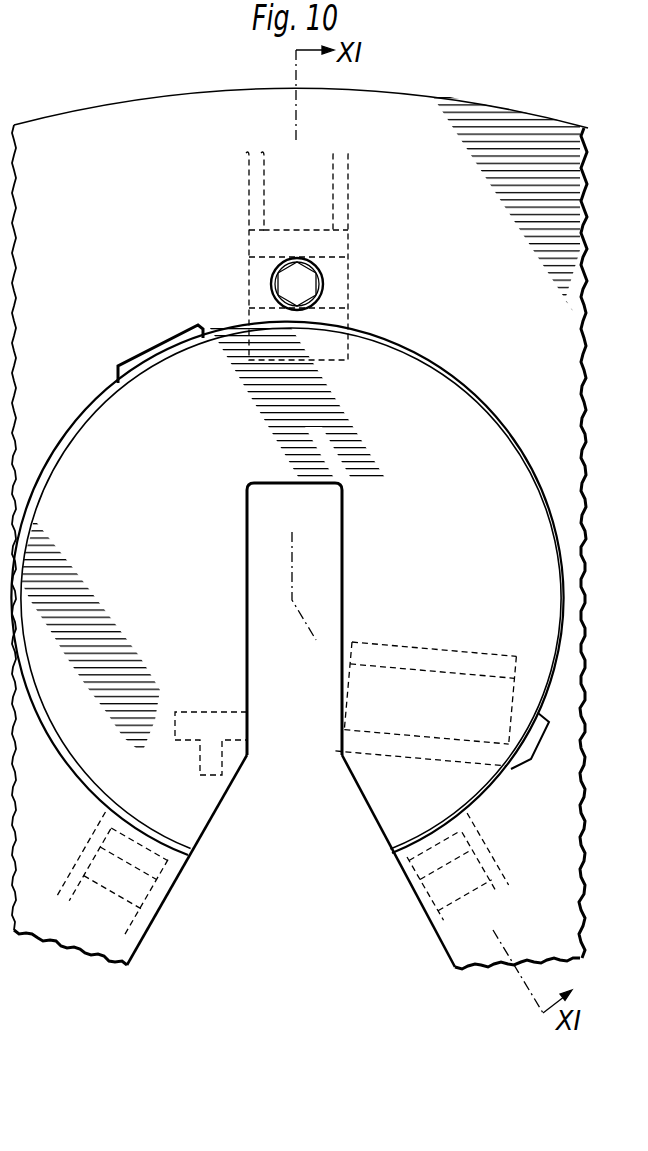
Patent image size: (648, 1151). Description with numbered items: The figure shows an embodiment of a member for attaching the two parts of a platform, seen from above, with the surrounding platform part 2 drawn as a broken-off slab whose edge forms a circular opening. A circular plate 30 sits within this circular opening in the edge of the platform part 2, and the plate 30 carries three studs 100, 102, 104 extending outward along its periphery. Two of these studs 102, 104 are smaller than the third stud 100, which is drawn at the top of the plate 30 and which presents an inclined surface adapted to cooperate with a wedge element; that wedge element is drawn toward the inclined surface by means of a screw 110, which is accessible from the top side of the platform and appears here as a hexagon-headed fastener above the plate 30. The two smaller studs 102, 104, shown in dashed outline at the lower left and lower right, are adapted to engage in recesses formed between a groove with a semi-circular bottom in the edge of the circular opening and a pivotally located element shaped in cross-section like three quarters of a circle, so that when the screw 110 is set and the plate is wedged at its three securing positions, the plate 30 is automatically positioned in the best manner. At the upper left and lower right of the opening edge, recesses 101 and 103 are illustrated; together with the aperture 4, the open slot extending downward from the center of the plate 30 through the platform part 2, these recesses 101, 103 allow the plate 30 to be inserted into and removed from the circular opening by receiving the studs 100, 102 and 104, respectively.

The base plate 2 is at (122, 110).
The plate 30 is at (418, 372).
The aperture 4 is at (358, 790).
The stud 100 is at (347, 343).
The screw 110 is at (292, 283).
The recess 101 is at (152, 357).
The recess 103 is at (526, 764).
The stud 102 is at (450, 892).
The stud 104 is at (135, 888).